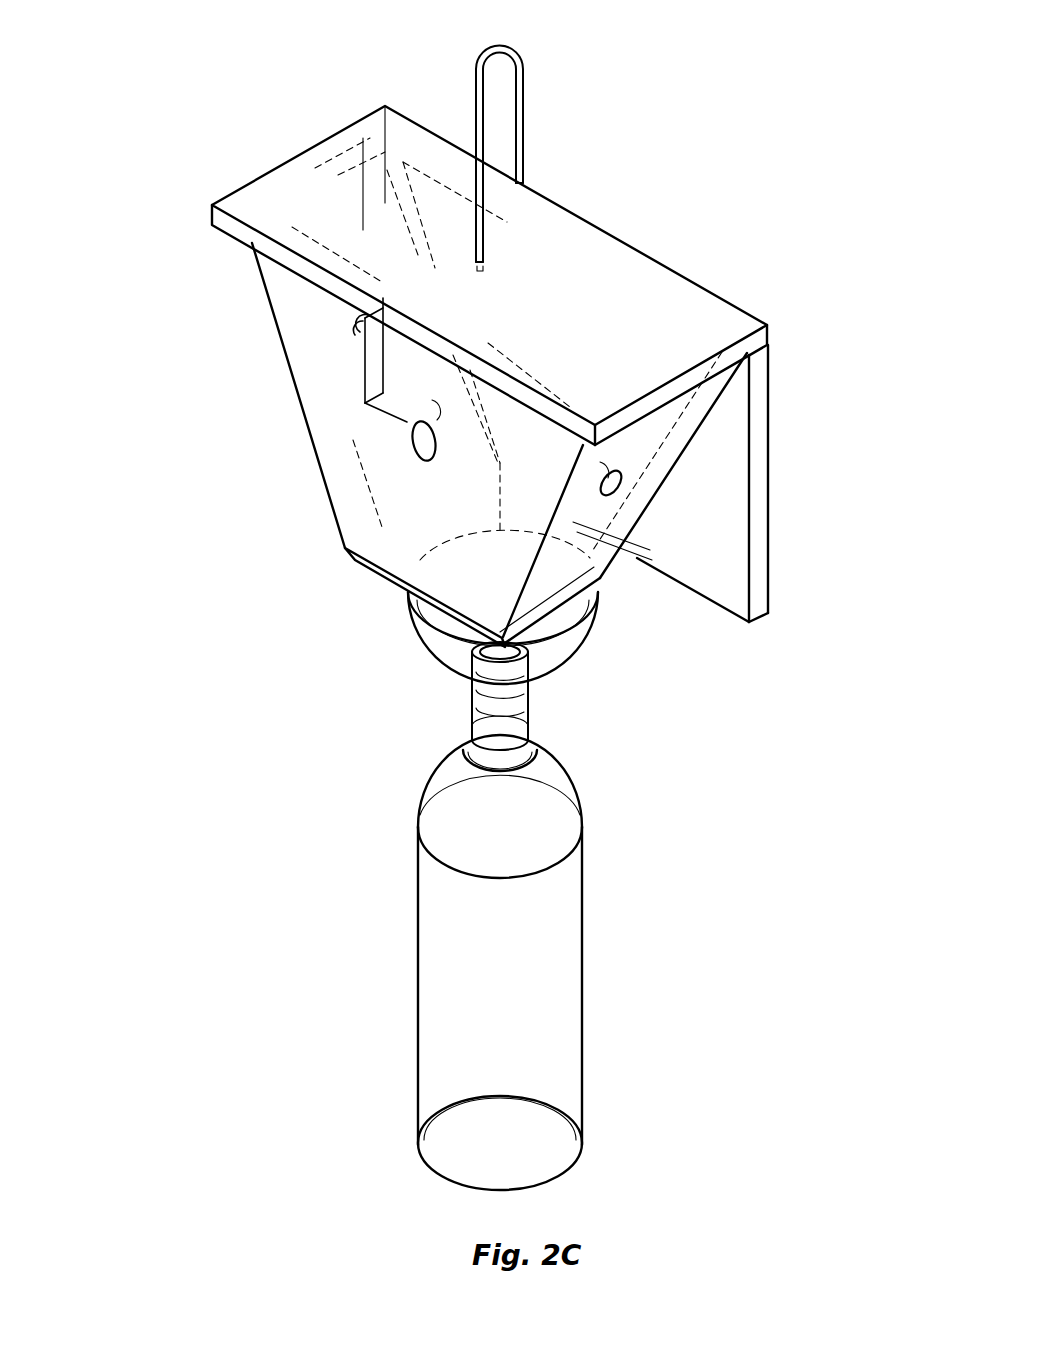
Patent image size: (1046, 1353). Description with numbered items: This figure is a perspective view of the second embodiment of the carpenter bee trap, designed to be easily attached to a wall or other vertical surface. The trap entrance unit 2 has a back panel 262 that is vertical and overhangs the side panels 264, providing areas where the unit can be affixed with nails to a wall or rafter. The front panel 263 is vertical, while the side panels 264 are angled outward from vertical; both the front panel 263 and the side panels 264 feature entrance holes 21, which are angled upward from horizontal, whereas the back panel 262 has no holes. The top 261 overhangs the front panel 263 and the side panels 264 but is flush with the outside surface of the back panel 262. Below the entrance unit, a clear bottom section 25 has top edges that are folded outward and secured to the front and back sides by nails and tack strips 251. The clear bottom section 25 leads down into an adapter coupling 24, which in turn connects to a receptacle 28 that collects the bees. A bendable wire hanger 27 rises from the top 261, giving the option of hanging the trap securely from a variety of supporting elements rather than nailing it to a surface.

The trap entrance unit 2 is at (408, 371).
The entrance holes 21 is at (410, 437).
The adapter coupling 24 is at (470, 702).
The clear bottom section 25 is at (437, 664).
The tack strips 251 is at (350, 597).
The top 261 is at (575, 233).
The back panel 262 is at (750, 547).
The front panel 263 is at (345, 360).
The side panels 264 is at (633, 557).
The wire hanger 27 is at (524, 123).
The receptacle 28 is at (418, 892).